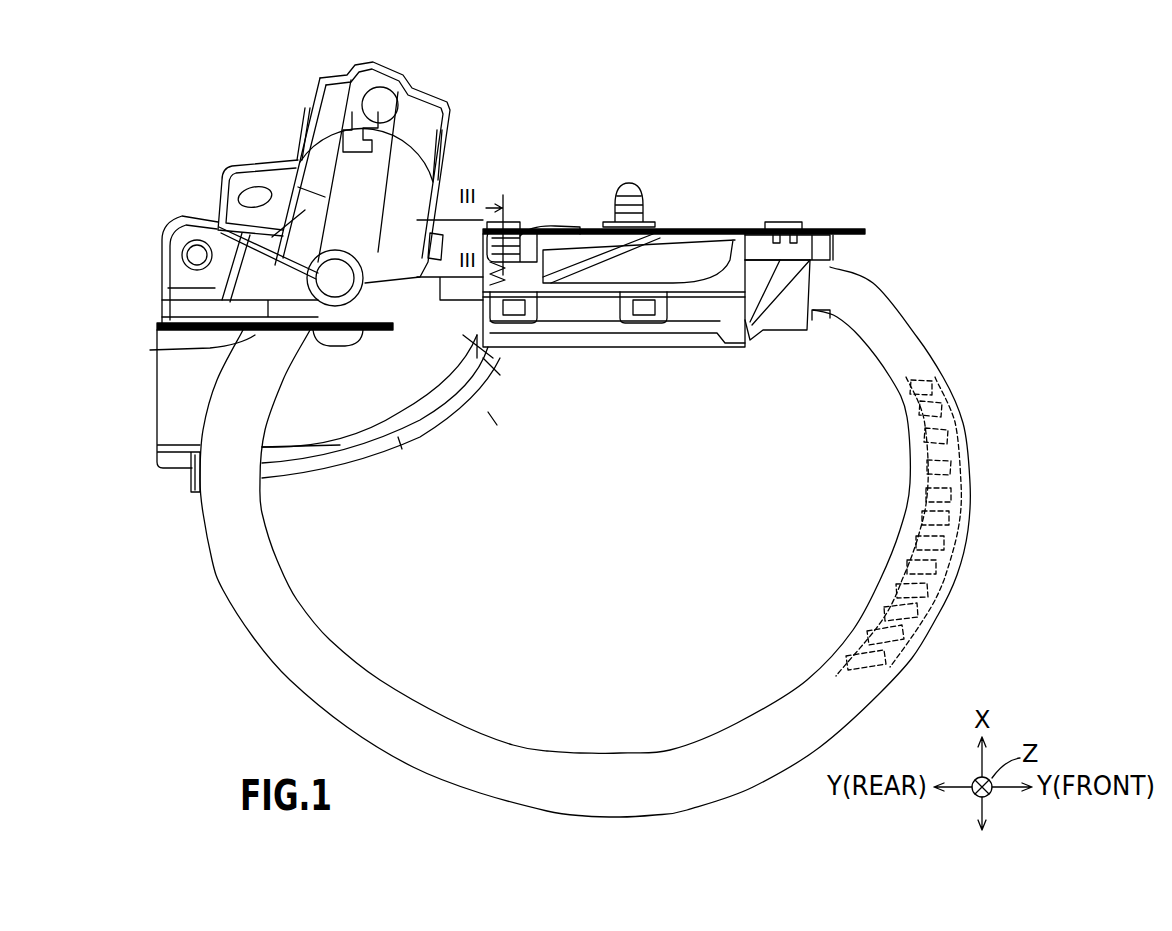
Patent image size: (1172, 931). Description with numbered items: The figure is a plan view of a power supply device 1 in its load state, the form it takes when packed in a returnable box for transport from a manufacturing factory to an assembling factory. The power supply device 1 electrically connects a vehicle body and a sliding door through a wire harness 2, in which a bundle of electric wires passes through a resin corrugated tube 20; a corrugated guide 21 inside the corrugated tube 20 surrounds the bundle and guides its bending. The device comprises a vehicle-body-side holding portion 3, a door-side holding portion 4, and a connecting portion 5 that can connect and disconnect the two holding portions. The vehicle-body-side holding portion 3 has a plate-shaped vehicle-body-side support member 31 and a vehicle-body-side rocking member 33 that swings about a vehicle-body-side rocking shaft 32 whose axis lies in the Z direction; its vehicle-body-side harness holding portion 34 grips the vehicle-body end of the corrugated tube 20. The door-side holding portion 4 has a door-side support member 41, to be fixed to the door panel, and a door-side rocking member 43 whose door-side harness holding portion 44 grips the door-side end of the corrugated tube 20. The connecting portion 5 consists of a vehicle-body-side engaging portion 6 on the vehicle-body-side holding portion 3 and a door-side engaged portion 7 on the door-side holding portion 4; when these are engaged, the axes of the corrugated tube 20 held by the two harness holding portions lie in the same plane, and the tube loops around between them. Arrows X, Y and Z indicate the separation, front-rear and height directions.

The power supply device 1 is at (838, 107).
The wire harness 2 is at (624, 542).
The corrugated tube 20 is at (972, 430).
The corrugated guide 21 is at (962, 470).
The vehicle-body-side holding portion 3 is at (442, 74).
The door-side holding portion 4 is at (685, 299).
The door-side support member 41 is at (850, 229).
The door-side rocking member 43 is at (755, 333).
The door-side harness holding portion 44 is at (828, 320).
The connecting portion 5 is at (526, 229).
The vehicle-body-side engaging portion 6 is at (512, 228).
The door-side engaged portion 7 is at (562, 230).
The vehicle-body-side support member 31 is at (358, 410).
The vehicle-body-side rocking shaft 32 is at (335, 279).
The vehicle-body-side rocking member 33 is at (345, 338).
The vehicle-body-side harness holding portion 34 is at (150, 350).